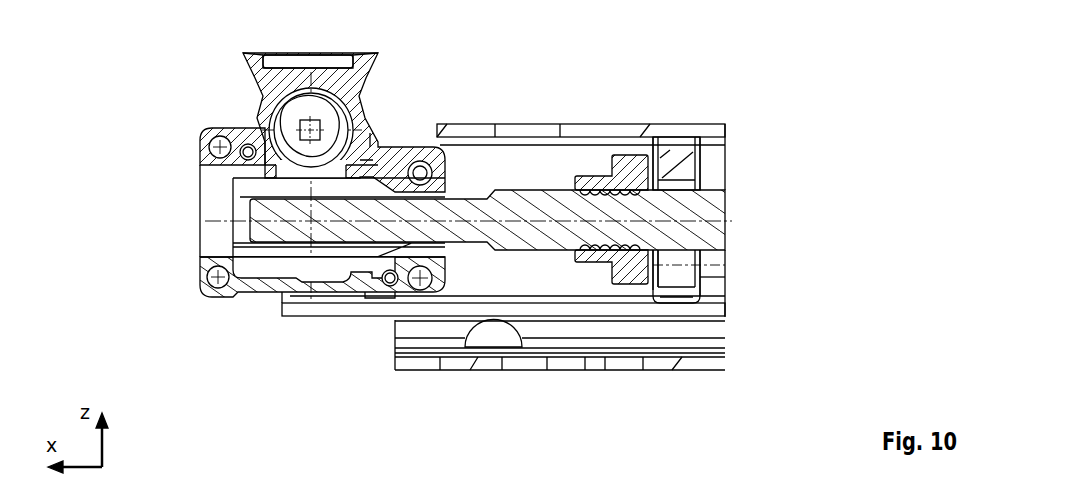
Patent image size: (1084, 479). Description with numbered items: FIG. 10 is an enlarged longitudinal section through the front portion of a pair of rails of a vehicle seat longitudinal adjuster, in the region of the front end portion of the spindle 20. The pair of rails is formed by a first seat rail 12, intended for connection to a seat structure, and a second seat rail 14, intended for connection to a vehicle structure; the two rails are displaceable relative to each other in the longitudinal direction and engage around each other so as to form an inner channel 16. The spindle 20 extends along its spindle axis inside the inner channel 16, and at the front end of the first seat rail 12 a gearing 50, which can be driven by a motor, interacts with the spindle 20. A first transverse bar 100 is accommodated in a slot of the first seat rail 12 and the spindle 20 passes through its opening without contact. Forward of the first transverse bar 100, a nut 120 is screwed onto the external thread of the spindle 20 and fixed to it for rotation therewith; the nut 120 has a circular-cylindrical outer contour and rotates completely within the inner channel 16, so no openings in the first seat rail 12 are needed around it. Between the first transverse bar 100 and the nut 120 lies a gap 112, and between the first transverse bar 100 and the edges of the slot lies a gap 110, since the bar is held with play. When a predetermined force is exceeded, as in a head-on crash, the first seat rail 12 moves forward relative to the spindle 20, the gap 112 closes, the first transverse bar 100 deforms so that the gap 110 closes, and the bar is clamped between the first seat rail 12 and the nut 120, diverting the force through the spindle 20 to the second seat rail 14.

The gearing 50 is at (250, 137).
The inner channel 16 is at (533, 146).
The first seat rail 12 is at (487, 130).
The spindle 20 is at (695, 216).
The nut 120 is at (620, 163).
The gap 112 is at (657, 175).
The first transverse bar 100 is at (681, 148).
The gap 110 is at (700, 140).
The second seat rail 14 is at (420, 362).